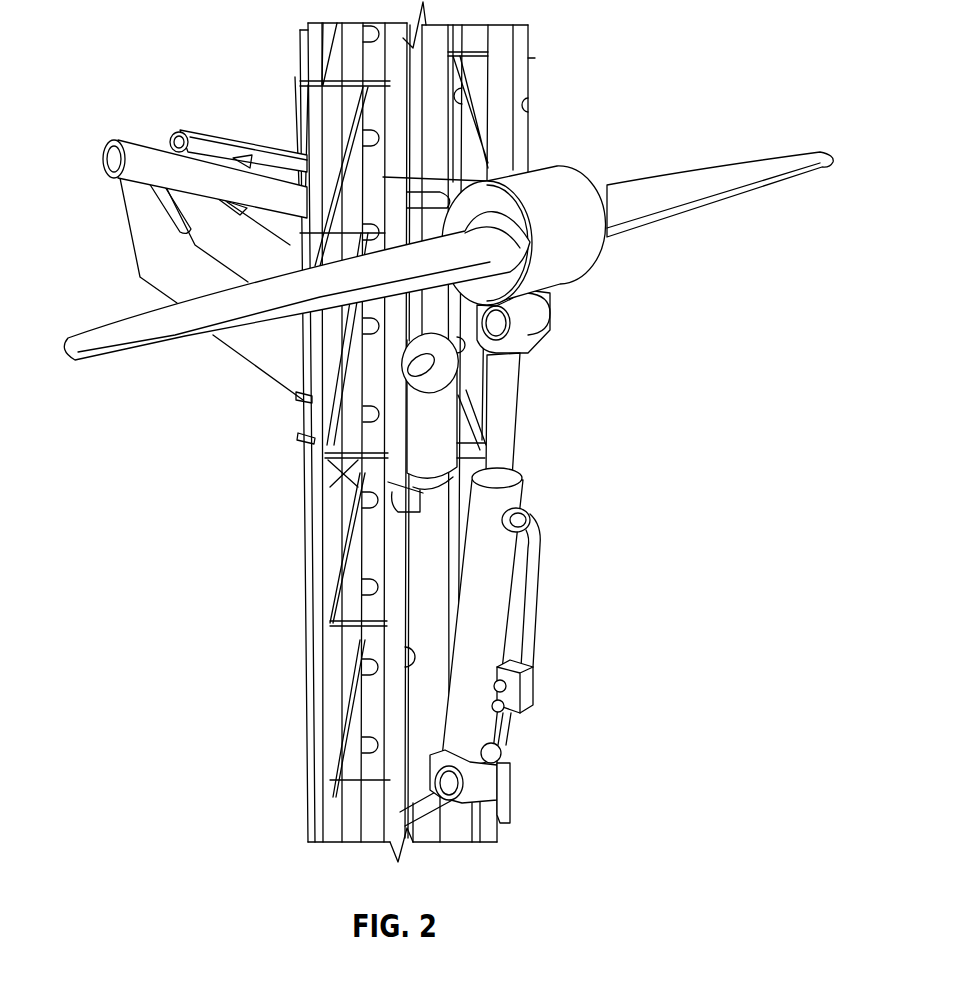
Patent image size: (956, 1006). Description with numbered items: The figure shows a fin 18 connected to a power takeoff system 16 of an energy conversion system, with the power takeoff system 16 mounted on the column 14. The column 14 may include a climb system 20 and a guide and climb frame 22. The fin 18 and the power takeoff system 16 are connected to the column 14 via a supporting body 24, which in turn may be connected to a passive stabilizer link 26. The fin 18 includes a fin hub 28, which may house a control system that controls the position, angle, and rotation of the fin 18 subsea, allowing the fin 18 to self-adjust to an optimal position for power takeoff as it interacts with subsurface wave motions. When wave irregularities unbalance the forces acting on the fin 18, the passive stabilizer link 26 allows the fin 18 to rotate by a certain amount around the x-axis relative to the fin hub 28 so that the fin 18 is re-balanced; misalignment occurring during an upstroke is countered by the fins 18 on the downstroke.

The column 14 is at (385, 453).
The power takeoff system 16 is at (488, 550).
The fin 18 is at (760, 170).
The climb system 20 is at (355, 745).
The guide and climb frame 22 is at (308, 500).
The supporting body 24 is at (272, 355).
The passive stabilizer link 26 is at (220, 177).
The fin hub 28 is at (572, 252).